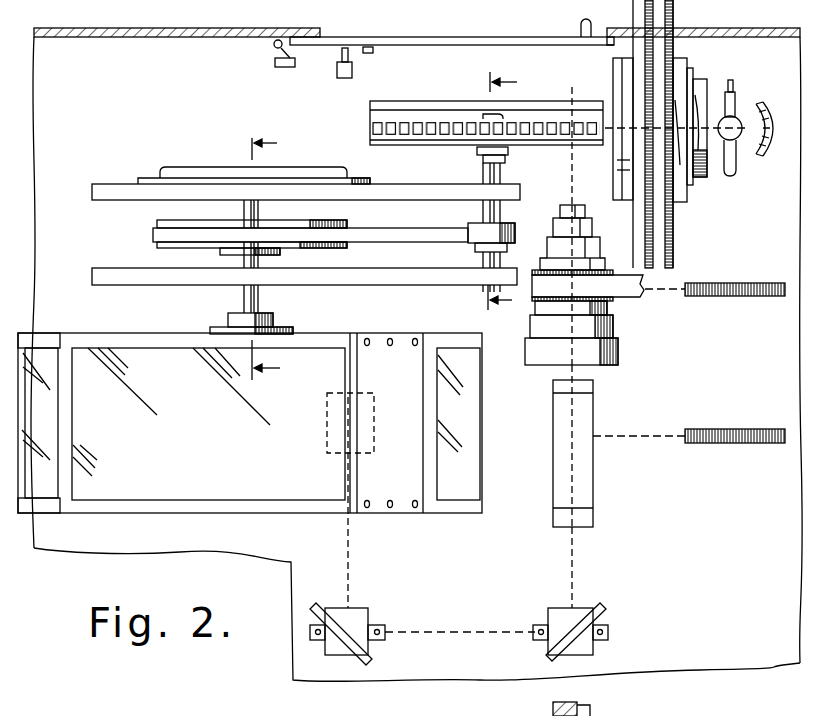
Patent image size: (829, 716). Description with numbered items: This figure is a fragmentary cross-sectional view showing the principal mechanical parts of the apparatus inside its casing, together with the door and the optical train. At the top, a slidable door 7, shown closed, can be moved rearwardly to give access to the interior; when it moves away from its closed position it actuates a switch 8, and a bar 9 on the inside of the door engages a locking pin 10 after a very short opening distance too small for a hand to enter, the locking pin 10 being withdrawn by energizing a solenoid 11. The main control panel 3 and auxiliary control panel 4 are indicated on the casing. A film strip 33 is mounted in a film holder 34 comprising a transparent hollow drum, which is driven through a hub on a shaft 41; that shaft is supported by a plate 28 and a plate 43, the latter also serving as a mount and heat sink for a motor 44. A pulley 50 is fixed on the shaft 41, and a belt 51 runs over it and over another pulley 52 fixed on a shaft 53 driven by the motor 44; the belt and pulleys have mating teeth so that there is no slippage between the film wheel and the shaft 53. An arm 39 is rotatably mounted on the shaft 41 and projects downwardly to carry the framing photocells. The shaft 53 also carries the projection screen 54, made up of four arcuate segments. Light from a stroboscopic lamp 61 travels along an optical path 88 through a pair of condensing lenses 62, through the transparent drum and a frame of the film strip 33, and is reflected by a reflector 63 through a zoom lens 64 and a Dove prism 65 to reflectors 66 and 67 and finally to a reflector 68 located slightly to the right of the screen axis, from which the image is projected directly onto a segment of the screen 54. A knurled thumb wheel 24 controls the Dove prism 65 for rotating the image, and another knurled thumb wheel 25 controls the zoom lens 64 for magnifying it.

The main control panel 3 is at (277, 259).
The auxiliary control panel 4 is at (511, 207).
The slidable door 7 is at (478, 37).
The switch 8 is at (276, 66).
The bar 9 is at (374, 50).
The locking pin 10 is at (338, 53).
The solenoid 11 is at (356, 70).
The knurled thumb wheel 24 is at (722, 444).
The knurled thumb wheel 25 is at (720, 297).
The plate 28 is at (379, 278).
The film strip 33 is at (403, 135).
The film holder 34 is at (437, 100).
The arm 39 is at (505, 157).
The shaft 41 is at (500, 182).
The plate 43 is at (322, 190).
The motor 44 is at (192, 170).
The pulley 50 is at (505, 222).
The belt 51 is at (367, 232).
The pulley 52 is at (160, 241).
The shaft 53 is at (256, 297).
The projection screen 54 is at (172, 488).
The stroboscopic lamp 61 is at (738, 106).
The condensing lenses 62 is at (690, 174).
The reflector 63 is at (575, 100).
The zoom lens 64 is at (610, 335).
The Dove prism 65 is at (588, 482).
The reflector 66 is at (596, 618).
The reflector 67 is at (352, 655).
The reflector 68 is at (370, 453).
The optical path 88 is at (575, 568).